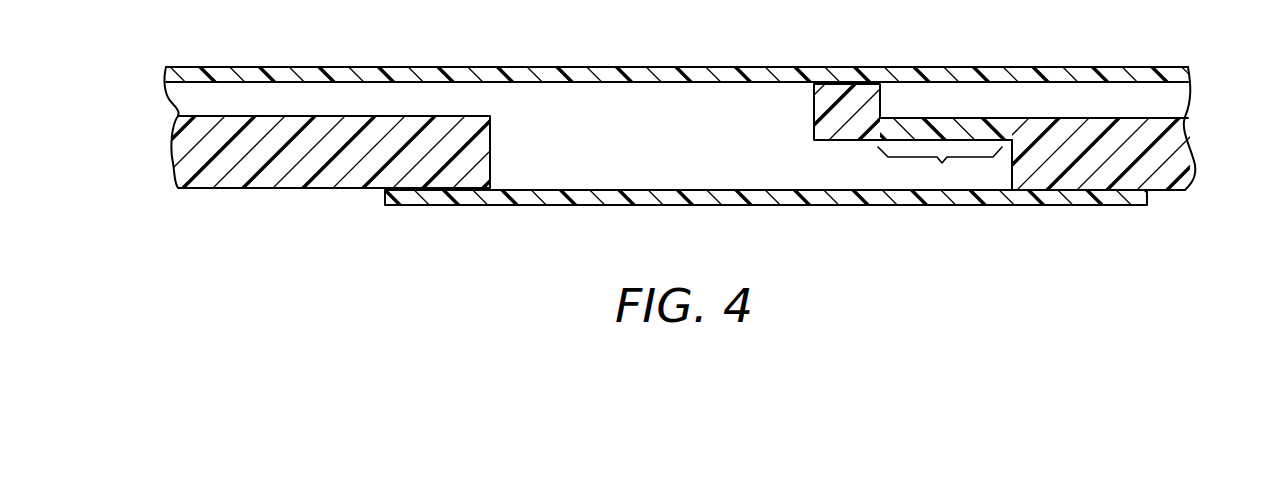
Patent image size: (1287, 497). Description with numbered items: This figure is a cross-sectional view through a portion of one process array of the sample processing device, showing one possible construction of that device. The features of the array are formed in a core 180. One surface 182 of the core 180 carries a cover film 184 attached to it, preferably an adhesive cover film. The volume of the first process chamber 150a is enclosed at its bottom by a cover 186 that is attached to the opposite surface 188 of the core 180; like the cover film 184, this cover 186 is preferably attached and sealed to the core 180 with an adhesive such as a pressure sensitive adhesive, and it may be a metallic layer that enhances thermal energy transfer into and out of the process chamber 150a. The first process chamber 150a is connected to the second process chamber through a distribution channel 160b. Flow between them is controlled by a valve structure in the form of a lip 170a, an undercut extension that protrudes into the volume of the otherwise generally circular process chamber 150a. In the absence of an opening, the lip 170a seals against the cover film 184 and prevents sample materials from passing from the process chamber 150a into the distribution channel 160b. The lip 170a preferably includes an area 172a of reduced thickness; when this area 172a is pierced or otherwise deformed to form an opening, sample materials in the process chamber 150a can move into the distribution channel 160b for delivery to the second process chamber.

The first process chamber 150a is at (647, 148).
The distribution channel 160b is at (1140, 95).
The lip 170a is at (962, 87).
The area of reduced thickness 172a is at (942, 163).
The core 180 is at (320, 128).
The surface of the core 182 is at (842, 83).
The cover film 184 is at (718, 76).
The cover 186 is at (523, 201).
The surface of the core 188 is at (1080, 191).